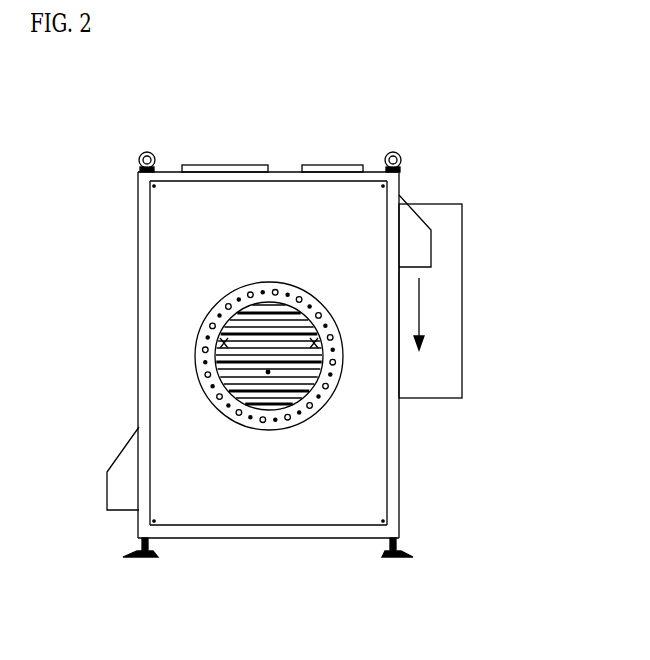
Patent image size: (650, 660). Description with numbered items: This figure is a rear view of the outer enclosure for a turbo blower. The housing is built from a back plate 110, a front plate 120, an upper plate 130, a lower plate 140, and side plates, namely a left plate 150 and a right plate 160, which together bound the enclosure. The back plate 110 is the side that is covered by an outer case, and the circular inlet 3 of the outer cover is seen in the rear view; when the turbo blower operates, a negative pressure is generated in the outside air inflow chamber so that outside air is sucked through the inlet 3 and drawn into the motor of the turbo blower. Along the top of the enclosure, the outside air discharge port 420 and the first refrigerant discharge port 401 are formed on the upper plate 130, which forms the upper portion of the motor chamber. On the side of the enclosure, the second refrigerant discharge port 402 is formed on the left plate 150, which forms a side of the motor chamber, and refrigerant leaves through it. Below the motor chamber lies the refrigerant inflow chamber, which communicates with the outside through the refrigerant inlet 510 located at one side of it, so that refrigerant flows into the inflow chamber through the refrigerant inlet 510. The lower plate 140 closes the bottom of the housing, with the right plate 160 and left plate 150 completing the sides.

The inlet 3 is at (196, 363).
The back plate 110 is at (337, 374).
The front plate 120 is at (290, 396).
The upper plate 130 is at (287, 171).
The lower plate 140 is at (272, 539).
The left plate 150 is at (399, 490).
The right plate 160 is at (139, 260).
The first refrigerant discharge port 401 is at (333, 165).
The second refrigerant discharge port 402 is at (425, 224).
The outside air discharge port 420 is at (226, 165).
The refrigerant inlet 510 is at (125, 510).